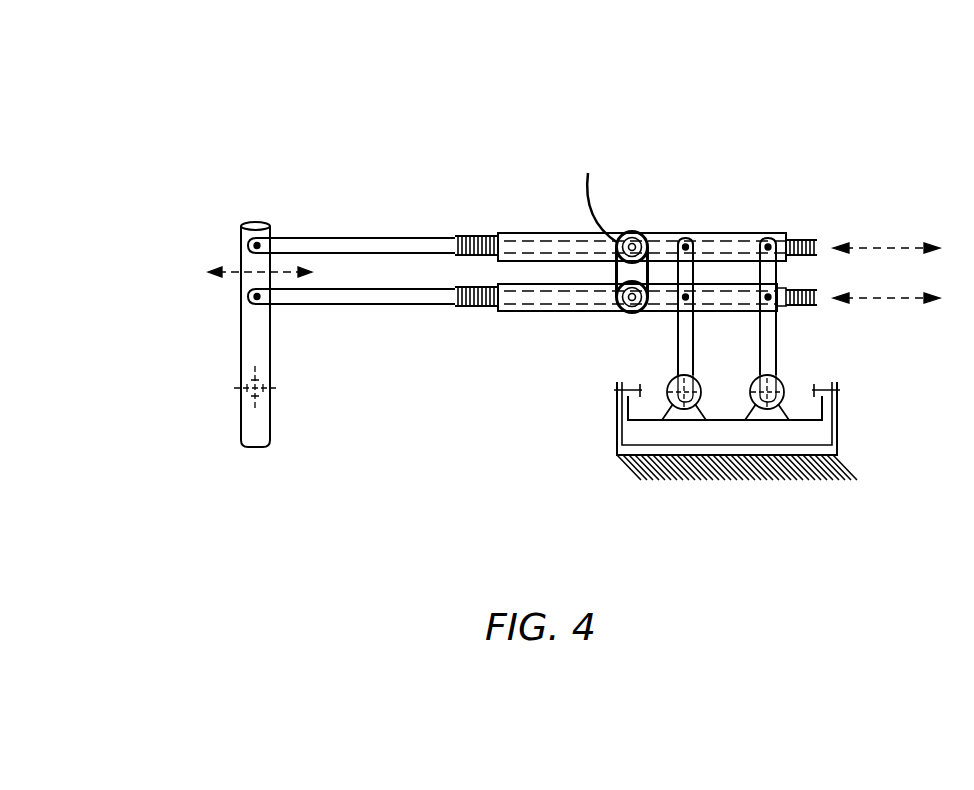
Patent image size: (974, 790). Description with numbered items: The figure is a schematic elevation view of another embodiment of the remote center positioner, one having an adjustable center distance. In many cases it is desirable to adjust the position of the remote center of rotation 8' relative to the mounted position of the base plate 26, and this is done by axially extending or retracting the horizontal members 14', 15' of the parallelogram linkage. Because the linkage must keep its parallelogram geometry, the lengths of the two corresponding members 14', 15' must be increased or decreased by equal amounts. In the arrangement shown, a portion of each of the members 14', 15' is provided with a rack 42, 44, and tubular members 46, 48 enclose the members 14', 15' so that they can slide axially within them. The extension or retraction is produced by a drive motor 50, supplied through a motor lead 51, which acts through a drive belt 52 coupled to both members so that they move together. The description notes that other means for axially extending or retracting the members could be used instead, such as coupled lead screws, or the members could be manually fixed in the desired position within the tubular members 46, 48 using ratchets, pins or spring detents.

The remote center of rotation 8' is at (183, 349).
The horizontal member 14' is at (334, 181).
The horizontal member 15' is at (342, 407).
The rack 42 is at (468, 237).
The rack 44 is at (470, 306).
The tubular member 46 is at (550, 233).
The tubular member 48 is at (555, 311).
The drive motor 50 is at (637, 233).
The motor lead 51 is at (588, 173).
The drive belt 52 is at (670, 233).
The base plate 26 is at (838, 435).